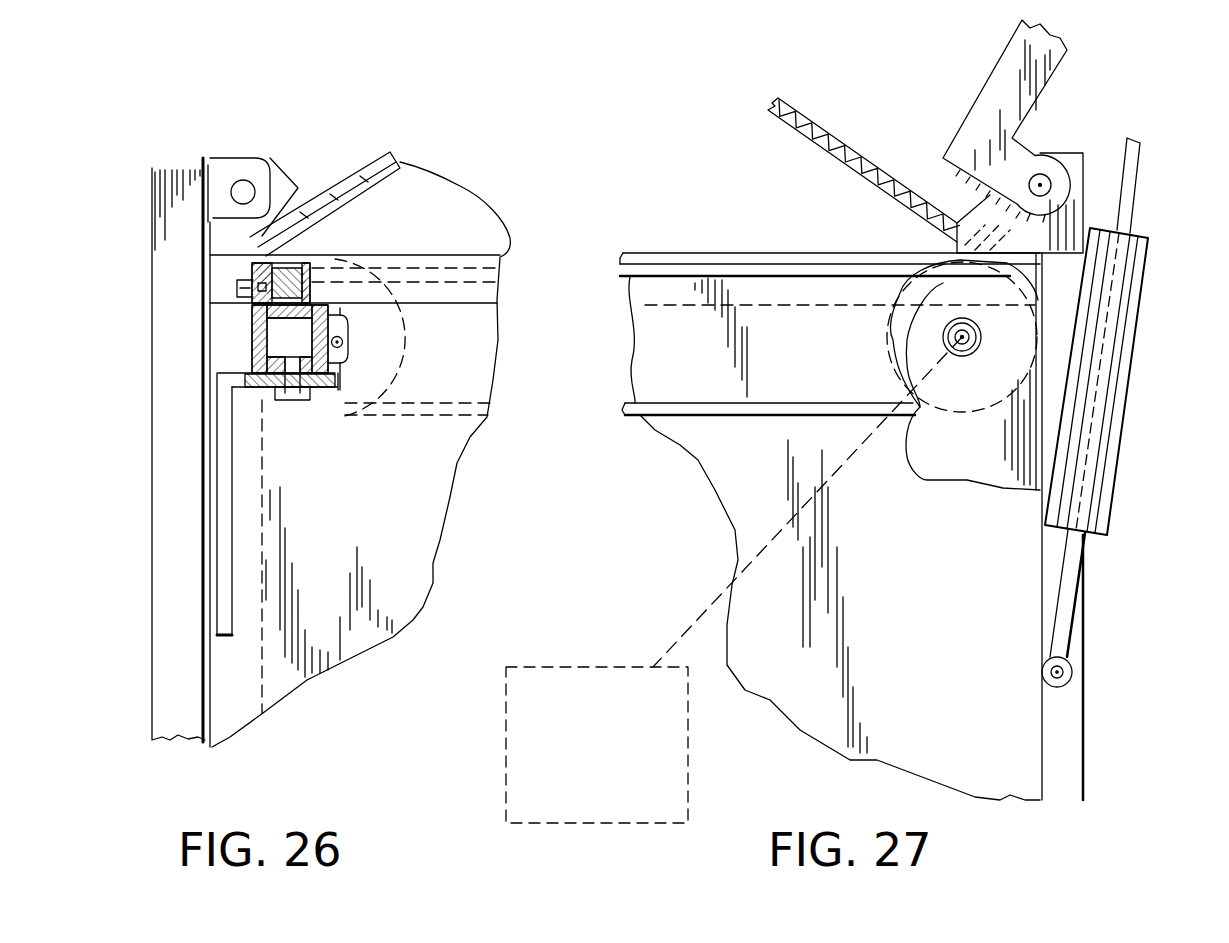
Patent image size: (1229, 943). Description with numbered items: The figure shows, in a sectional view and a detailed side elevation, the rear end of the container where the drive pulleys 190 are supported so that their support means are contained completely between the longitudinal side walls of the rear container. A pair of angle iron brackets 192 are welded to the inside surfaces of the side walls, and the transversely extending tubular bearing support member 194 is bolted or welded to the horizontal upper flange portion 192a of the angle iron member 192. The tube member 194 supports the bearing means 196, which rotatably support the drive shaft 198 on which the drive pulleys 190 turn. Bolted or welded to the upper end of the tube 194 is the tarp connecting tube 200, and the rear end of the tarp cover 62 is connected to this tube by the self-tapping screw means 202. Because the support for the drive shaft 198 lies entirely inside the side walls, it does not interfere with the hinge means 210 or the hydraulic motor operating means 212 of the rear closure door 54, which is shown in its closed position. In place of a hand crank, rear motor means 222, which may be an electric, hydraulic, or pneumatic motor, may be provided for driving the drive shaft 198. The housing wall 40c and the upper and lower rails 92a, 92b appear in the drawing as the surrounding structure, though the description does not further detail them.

In FIG. 26, the rear closure door 54 is at (172, 568).
In FIG. 26, the housing 40c is at (380, 513).
In FIG. 27, the housing 40c is at (922, 600).
In FIG. 26, the tarp cover 62 is at (332, 187).
In FIG. 27, the tarp cover 62 is at (857, 147).
In FIG. 26, the drive pulleys 190 is at (383, 290).
In FIG. 27, the drive pulleys 190 is at (905, 290).
In FIG. 26, the angle iron brackets 192 is at (230, 562).
In FIG. 26, the horizontal upper flange portion 192a is at (322, 418).
In FIG. 26, the tubular bearing support member 194 is at (252, 343).
In FIG. 26, the bearing means 196 is at (346, 358).
In FIG. 26, the drive shaft 198 is at (343, 340).
In FIG. 27, the drive shaft 198 is at (973, 356).
In FIG. 26, the tarp connecting tube 200 is at (307, 247).
In FIG. 26, the self-tapping screw means 202 is at (250, 286).
In FIG. 27, the upper rail 92a is at (683, 253).
In FIG. 27, the lower rail 92b is at (698, 415).
In FIG. 27, the hinge means 210 is at (1043, 180).
In FIG. 27, the hydraulic motor operating means 212 is at (1115, 363).
In FIG. 27, the rear motor means 222 is at (523, 800).